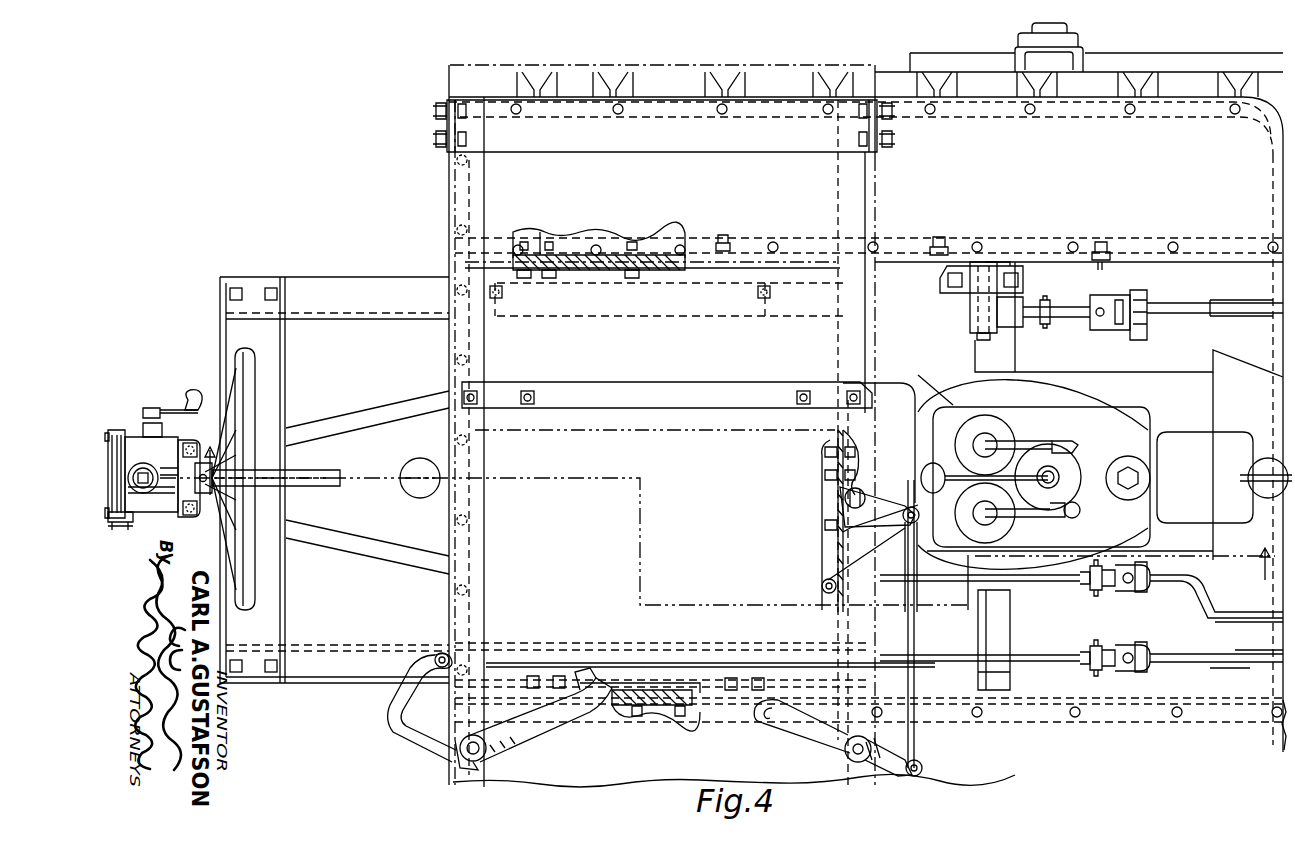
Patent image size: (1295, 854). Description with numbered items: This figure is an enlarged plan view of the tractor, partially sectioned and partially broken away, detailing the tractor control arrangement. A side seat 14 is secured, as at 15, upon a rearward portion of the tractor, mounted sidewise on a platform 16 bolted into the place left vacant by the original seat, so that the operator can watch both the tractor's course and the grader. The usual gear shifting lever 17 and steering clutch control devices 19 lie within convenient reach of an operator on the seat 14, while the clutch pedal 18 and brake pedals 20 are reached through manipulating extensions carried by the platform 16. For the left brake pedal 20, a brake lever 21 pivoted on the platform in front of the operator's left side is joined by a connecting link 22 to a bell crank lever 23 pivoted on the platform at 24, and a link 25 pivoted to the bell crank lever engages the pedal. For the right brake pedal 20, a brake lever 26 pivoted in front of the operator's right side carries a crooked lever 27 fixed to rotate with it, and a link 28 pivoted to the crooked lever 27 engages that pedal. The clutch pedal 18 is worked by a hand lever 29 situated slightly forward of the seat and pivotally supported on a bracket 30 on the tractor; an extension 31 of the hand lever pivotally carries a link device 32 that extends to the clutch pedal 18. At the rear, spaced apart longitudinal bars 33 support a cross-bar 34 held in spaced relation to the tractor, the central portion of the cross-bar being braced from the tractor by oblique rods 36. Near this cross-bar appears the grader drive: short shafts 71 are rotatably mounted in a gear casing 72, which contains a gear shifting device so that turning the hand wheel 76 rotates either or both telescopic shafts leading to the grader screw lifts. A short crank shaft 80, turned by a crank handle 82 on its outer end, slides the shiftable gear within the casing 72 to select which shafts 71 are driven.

The side seat 14 is at (446, 67).
The seat securing means 15 is at (432, 136).
The platform 16 is at (866, 225).
The gear shifting lever 17 is at (932, 473).
The clutch pedal 18 is at (1197, 314).
The steering clutch control devices 19 is at (1078, 451).
The brake pedals 20 is at (1195, 622).
The brake lever 21 is at (795, 745).
The connecting link 22 is at (918, 648).
The bell crank lever 23 is at (882, 511).
The pivot 24 is at (862, 492).
The link 25 is at (1028, 586).
The brake lever 26 is at (530, 745).
The crooked lever 27 is at (392, 731).
The link 28 is at (620, 662).
The hand lever 29 is at (1062, 320).
The bracket 30 is at (968, 292).
The hand lever extension 31 is at (1043, 322).
The link device 32 is at (1105, 330).
The longitudinal bars 33 is at (340, 277).
The cross-bar 34 is at (287, 381).
The oblique rods 36 is at (368, 409).
The short shafts 71 is at (198, 469).
The gear casing 72 is at (162, 514).
The hand wheel 76 is at (254, 416).
The crank shaft 80 is at (147, 408).
The crank handle 82 is at (190, 390).